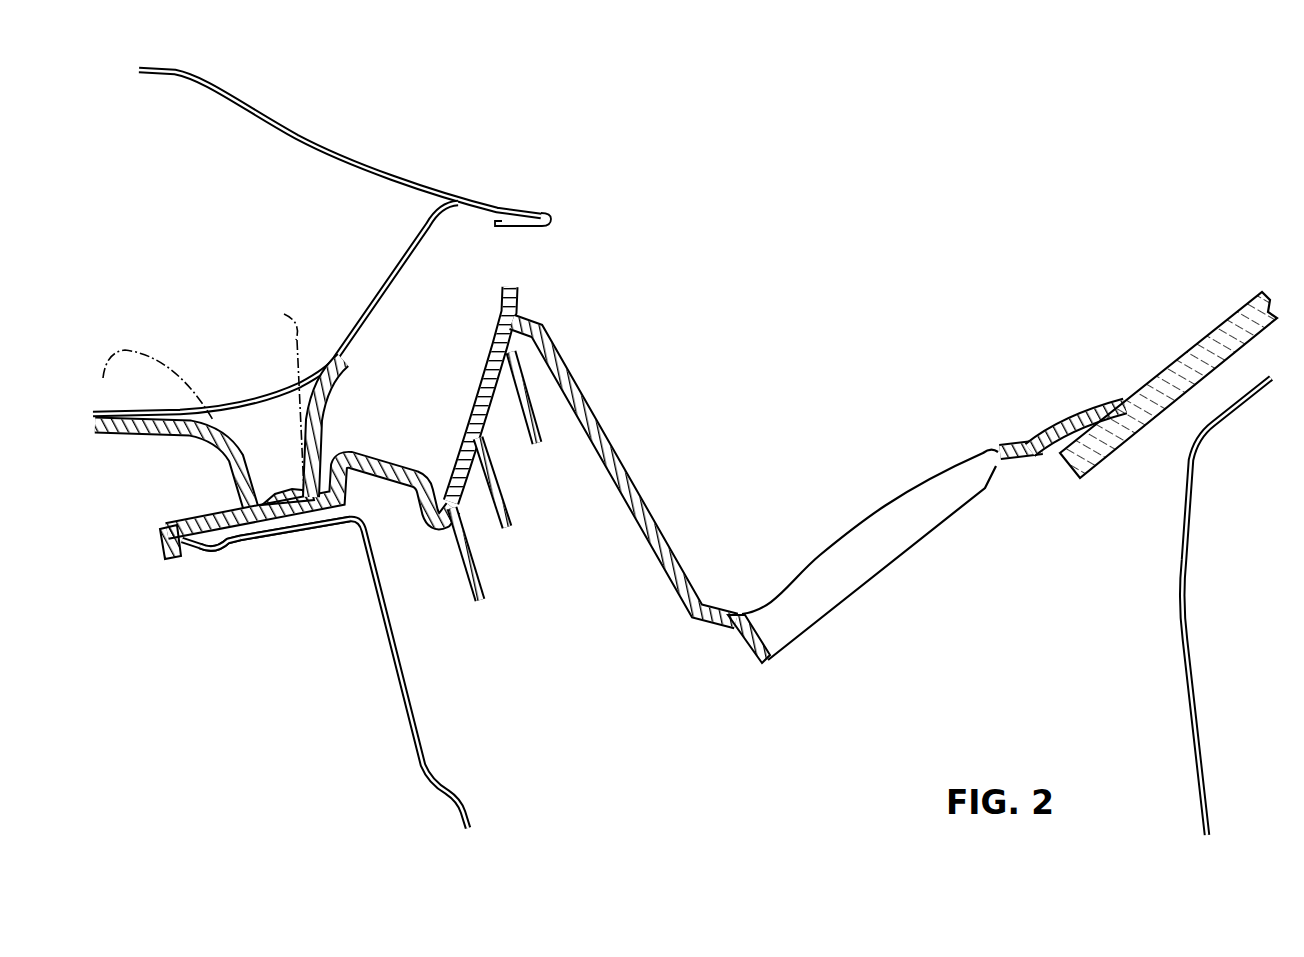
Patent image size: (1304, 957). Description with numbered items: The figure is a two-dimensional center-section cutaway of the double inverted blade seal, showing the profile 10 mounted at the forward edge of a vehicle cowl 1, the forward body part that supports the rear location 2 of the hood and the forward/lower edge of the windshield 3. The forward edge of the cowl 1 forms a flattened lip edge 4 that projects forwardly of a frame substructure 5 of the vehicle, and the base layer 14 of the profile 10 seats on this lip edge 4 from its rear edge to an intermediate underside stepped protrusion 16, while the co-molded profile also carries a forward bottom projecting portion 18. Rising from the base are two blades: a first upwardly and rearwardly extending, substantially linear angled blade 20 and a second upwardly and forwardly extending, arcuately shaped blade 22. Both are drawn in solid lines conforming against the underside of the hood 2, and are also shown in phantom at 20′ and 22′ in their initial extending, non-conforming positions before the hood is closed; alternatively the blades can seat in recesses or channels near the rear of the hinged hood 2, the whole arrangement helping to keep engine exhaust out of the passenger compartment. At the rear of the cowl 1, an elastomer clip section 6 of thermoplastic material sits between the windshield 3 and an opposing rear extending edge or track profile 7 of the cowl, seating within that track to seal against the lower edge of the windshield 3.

The vehicle cowl 1 is at (893, 515).
The rear location of vehicle hood 2 is at (385, 282).
The windshield 3 is at (1200, 352).
The flattened lip edge 4 is at (268, 550).
The frame substructure 5 is at (398, 676).
The elastomer clip section 6 is at (1073, 413).
The track profile 7 is at (1022, 462).
The profile 10 is at (196, 361).
The base layer 14 is at (272, 500).
The intermediate underside stepped protrusion 16 is at (240, 548).
The forward bottom projecting portion 18 is at (168, 558).
The first angled blade 20 is at (340, 378).
The first blade in initial extending position 20′ is at (277, 391).
The second arcuately shaped blade 22 is at (172, 432).
The second blade in initial extending position 22′ is at (149, 385).